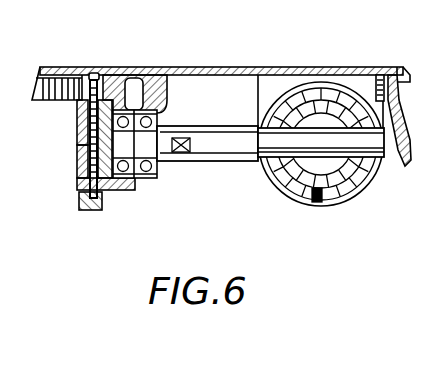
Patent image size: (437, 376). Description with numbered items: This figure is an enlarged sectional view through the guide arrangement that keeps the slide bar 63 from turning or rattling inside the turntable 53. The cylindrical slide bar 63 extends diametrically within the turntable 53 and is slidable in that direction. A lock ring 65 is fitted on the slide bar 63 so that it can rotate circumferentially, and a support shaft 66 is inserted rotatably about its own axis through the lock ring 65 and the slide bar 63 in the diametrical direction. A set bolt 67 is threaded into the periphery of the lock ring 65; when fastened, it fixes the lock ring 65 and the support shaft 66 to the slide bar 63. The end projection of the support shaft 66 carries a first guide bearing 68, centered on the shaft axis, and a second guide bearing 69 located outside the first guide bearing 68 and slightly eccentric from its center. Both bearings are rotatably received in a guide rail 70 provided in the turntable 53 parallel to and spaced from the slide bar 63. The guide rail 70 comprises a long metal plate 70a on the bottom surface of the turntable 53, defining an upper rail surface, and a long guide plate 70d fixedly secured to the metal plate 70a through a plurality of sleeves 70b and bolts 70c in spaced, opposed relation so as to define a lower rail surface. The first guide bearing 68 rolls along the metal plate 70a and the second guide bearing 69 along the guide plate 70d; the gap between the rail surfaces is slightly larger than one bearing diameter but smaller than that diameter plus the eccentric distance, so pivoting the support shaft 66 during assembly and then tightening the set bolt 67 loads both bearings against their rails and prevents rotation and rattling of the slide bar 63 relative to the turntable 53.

The turntable 53 is at (233, 73).
The slide bar 63 is at (340, 178).
The lock ring 65 is at (287, 190).
The support shaft 66 is at (214, 161).
The set bolt 67 is at (314, 203).
The first guide bearing 68 is at (157, 113).
The second guide bearing 69 is at (131, 178).
The guide rail 70 is at (68, 153).
The metal plate 70a is at (126, 102).
The sleeves 70b is at (80, 165).
The bolts 70c is at (84, 127).
The guide plate 70d is at (120, 190).